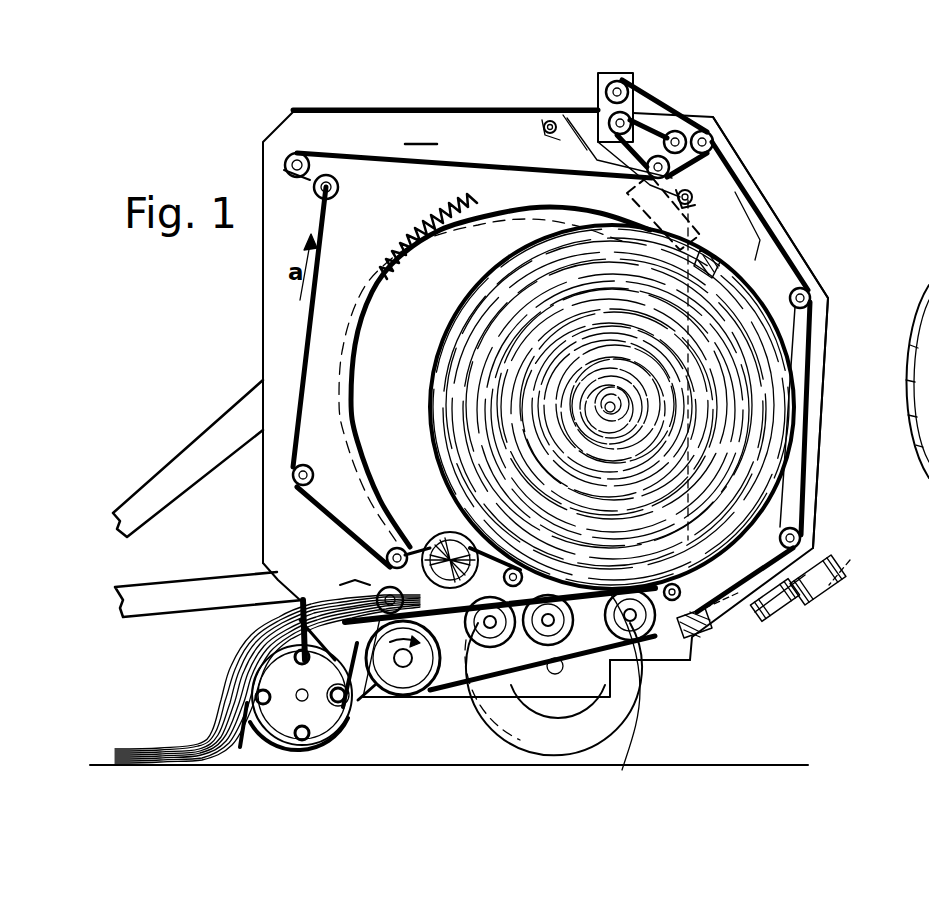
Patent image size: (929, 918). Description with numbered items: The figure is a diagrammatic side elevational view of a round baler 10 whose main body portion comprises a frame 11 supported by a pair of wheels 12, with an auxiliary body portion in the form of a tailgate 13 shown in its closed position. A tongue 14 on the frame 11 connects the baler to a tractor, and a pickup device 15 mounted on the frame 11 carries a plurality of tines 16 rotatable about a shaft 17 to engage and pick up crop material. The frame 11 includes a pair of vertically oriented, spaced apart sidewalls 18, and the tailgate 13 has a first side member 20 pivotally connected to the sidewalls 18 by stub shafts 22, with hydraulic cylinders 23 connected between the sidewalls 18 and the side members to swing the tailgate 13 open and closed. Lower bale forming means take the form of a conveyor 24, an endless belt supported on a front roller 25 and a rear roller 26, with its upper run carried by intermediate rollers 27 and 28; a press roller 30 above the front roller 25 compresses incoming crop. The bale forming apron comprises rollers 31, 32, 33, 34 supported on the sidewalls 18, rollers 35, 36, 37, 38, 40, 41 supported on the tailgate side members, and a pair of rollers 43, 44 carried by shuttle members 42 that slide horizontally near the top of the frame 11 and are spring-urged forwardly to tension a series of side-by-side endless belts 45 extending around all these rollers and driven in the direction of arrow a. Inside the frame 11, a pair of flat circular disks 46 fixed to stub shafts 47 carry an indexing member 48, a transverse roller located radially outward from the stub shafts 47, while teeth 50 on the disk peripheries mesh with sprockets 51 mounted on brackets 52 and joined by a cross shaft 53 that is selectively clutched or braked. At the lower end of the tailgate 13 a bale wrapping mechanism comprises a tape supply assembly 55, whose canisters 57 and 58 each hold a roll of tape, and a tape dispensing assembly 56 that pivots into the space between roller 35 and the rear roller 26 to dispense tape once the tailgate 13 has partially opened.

The round baler 10 is at (243, 112).
The frame 11 is at (438, 111).
The wheels 12 is at (612, 690).
The tailgate 13 is at (763, 190).
The tongue 14 is at (217, 582).
The pickup device 15 is at (284, 768).
The tines 16 is at (240, 735).
The shaft 17 is at (308, 703).
The sidewalls 18 is at (421, 130).
The first side member 20 is at (785, 248).
The stub shafts 22 is at (535, 130).
The hydraulic cylinders 23 is at (578, 250).
The conveyor 24 is at (632, 660).
The front roller 25 is at (437, 687).
The rear roller 26 is at (672, 602).
The intermediate roller 27 is at (492, 665).
The intermediate roller 28 is at (600, 625).
The press roller 30 is at (383, 592).
The roller 31 is at (300, 500).
The roller 32 is at (385, 550).
The roller 33 is at (318, 198).
The roller 34 is at (288, 163).
The roller 35 is at (683, 662).
The roller 36 is at (798, 535).
The roller 37 is at (817, 300).
The roller 38 is at (718, 165).
The roller 40 is at (686, 137).
The roller 41 is at (653, 118).
The shuttle members 42 is at (635, 85).
The roller 43 is at (647, 110).
The roller 44 is at (607, 74).
The endless belts 45 is at (360, 158).
The disks 46 is at (358, 333).
The stub shafts 47 is at (428, 395).
The indexing member 48 is at (446, 545).
The teeth 50 is at (437, 226).
The sprockets 51 is at (757, 245).
The brackets 52 is at (740, 176).
The cross shaft 53 is at (795, 268).
The tape supply assembly 55 is at (844, 583).
The tape dispensing assembly 56 is at (716, 628).
The tape supply canister 57 is at (830, 566).
The tape supply canister 58 is at (783, 607).